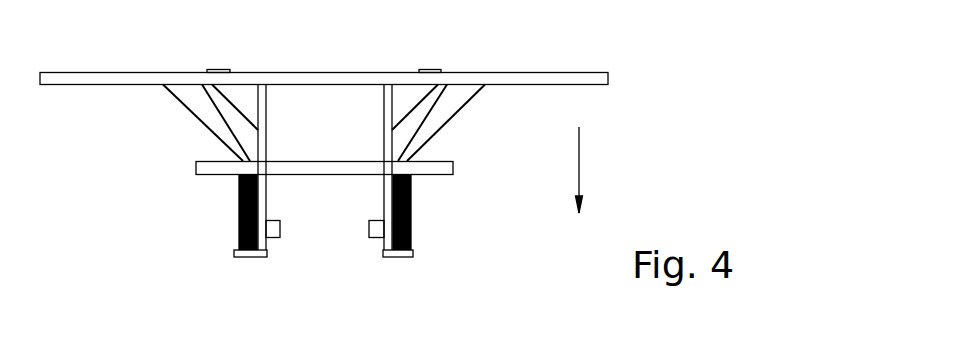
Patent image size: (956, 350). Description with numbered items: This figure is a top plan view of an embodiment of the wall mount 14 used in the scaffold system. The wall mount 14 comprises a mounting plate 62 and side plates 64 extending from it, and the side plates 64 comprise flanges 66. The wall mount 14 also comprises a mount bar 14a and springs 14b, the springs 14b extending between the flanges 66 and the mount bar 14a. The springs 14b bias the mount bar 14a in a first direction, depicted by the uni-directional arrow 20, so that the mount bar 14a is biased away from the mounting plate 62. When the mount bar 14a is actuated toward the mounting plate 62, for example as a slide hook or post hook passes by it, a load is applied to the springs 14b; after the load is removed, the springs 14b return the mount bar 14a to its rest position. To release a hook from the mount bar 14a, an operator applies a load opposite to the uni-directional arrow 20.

The wall mount 14 is at (99, 132).
The bar 14a is at (433, 175).
The spring 14b is at (238, 210).
The uni-directional arrow 20 is at (579, 157).
The mounting plate 62 is at (544, 72).
The side plate 64 is at (382, 130).
The flange 66 is at (395, 258).